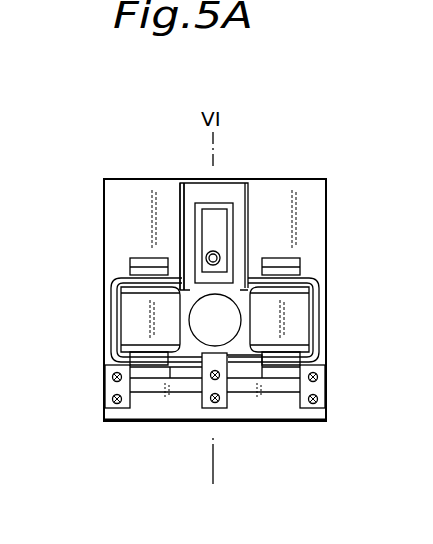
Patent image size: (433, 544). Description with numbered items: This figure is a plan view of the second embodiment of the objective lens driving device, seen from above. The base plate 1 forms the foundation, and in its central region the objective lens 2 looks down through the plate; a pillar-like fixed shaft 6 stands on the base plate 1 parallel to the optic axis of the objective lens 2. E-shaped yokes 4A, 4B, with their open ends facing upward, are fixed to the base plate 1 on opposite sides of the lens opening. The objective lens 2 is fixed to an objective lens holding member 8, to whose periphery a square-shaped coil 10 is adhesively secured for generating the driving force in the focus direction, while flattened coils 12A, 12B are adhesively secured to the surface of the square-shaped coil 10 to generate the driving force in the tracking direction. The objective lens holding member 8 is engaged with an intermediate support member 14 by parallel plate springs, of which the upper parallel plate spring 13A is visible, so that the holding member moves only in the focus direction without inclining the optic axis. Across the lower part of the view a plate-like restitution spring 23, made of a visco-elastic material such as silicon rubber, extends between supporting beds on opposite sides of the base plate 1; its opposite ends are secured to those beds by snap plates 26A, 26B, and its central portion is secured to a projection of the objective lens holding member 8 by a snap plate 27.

The base plate 1 is at (129, 200).
The objective lens 2 is at (209, 326).
The E-shaped yoke 4A is at (290, 378).
The E-shaped yoke 4B is at (152, 375).
The fixed shaft 6 is at (213, 250).
The objective lens holding member 8 is at (303, 318).
The square-shaped coil 10 is at (180, 275).
The flattened coil 12A is at (312, 278).
The flattened coil 12B is at (112, 284).
The parallel plate spring 13A is at (243, 242).
The intermediate support member 14 is at (232, 216).
The restitution spring 23 is at (253, 390).
The snap plate 26A is at (320, 387).
The snap plate 26B is at (118, 382).
The snap plate 27 is at (223, 393).